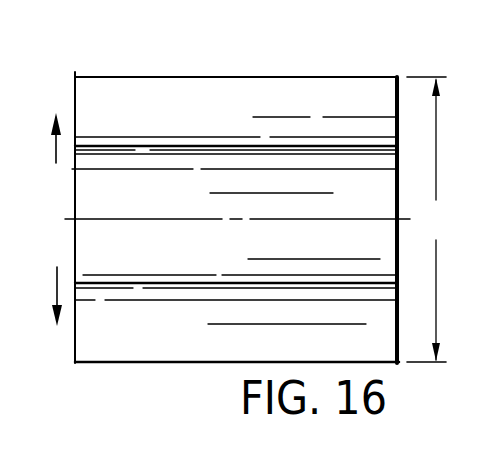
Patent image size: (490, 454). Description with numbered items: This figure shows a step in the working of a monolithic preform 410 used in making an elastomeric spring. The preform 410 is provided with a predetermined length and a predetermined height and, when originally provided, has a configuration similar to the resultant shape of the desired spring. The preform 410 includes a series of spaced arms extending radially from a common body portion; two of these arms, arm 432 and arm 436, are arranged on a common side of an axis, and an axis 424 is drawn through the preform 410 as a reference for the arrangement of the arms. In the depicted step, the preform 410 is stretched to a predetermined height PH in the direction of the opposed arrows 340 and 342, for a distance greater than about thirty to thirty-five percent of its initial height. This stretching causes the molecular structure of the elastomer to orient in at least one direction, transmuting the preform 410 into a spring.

The monolithic preform 410 is at (370, 60).
The arm 432 is at (145, 88).
The arm 436 is at (168, 353).
The axis 424 is at (287, 222).
The arrow 340 is at (55, 147).
The arrow 342 is at (55, 297).